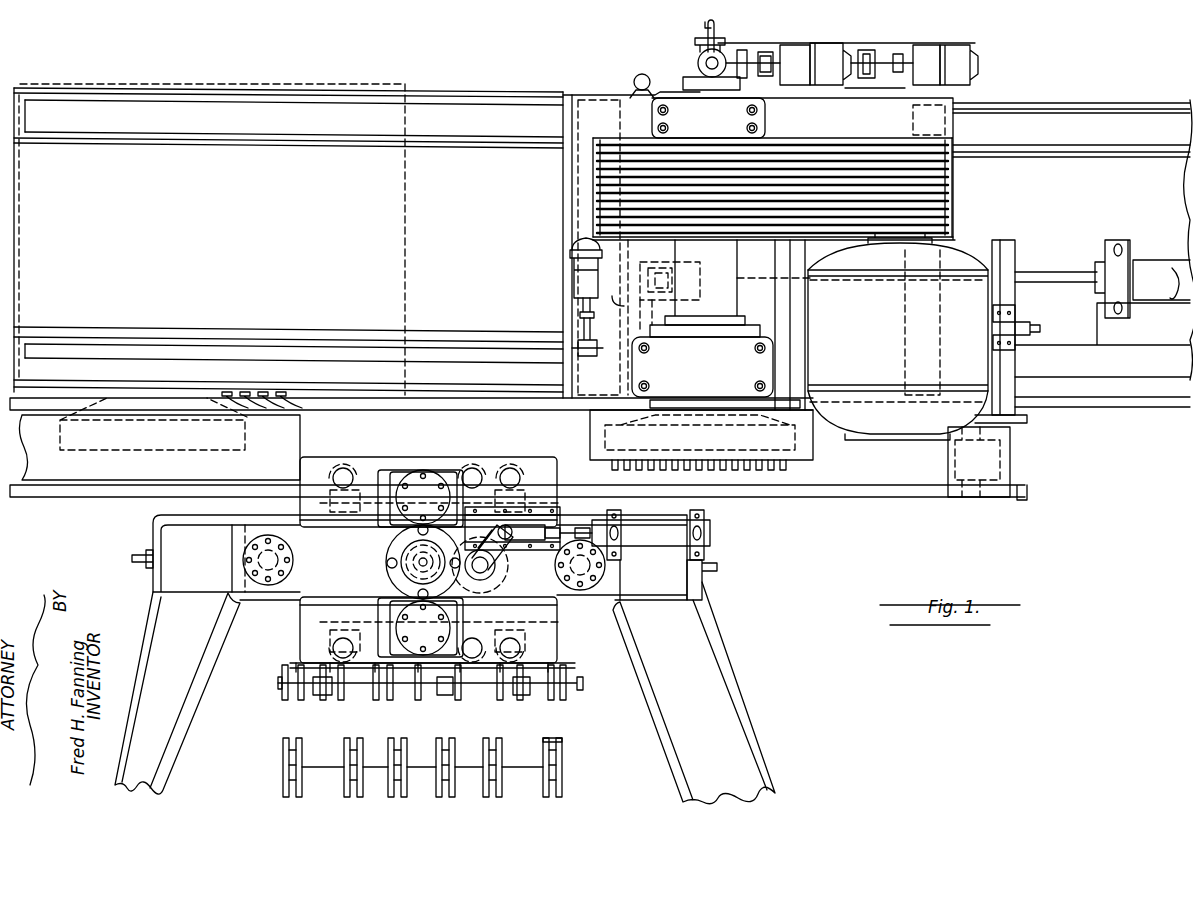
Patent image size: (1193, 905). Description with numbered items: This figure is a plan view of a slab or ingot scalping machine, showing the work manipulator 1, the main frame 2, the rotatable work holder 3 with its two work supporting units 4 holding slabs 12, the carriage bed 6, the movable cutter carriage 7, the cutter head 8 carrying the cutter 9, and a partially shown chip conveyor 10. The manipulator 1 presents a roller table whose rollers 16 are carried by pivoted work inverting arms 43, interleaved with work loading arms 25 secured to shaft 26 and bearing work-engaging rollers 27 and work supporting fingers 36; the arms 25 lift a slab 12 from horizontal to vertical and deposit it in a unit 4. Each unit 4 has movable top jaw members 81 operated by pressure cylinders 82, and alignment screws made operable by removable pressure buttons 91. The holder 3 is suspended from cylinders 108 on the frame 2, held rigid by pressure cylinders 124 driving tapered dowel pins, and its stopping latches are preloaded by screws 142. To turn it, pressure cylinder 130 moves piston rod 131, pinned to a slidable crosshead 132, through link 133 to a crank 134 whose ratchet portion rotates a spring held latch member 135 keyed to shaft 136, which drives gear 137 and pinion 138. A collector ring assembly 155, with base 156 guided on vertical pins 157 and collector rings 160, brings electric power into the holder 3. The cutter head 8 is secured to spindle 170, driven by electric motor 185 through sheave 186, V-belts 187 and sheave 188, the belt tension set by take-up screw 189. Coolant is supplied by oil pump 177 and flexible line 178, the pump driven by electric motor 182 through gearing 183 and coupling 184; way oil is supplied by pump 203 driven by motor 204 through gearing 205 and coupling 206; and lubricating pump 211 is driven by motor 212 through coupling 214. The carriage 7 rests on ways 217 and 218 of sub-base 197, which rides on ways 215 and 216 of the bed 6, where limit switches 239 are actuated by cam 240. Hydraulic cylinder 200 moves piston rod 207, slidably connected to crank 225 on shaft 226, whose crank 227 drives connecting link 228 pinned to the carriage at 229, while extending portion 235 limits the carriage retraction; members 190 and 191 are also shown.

The work manipulator 1 is at (268, 746).
The main frame 2 is at (310, 565).
The rotatable work holder 3 is at (290, 619).
The work supporting unit 4 is at (320, 481).
The carriage bed 6 is at (490, 243).
The cutter carriage 7 is at (842, 121).
The cutter head 8 is at (60, 435).
The cutter 9 is at (70, 455).
The chip conveyor 10 is at (68, 485).
The slab 12 is at (557, 475).
The roller 16 is at (552, 745).
The work loading arm 25 is at (296, 700).
The shaft 26 is at (568, 683).
The work-engaging roller 27 is at (290, 664).
The work supporting finger 36 is at (305, 650).
The work inverting arm 43 is at (560, 793).
The movable top jaw member 81 is at (340, 468).
The pressure cylinder 82 is at (353, 478).
The removable pressure button 91 is at (345, 492).
The cylinder 108 is at (420, 563).
The pressure cylinder 124 is at (424, 562).
The pressure cylinder 130 is at (660, 520).
The piston rod 131 is at (612, 520).
The slidable crosshead 132 is at (560, 520).
The link 133 is at (528, 520).
The crank 134 is at (505, 558).
The spring held latch member 135 is at (497, 570).
The shaft 136 is at (505, 580).
The gear 137 is at (557, 600).
The pinion 138 is at (395, 565).
The screw 142 is at (135, 556).
The collector ring assembly 155 is at (395, 545).
The base 156 is at (395, 585).
The vertical pin 157 is at (400, 575).
The collector ring 160 is at (400, 552).
The spindle 170 is at (718, 253).
The oil pump 177 is at (728, 56).
The flexible line 178 is at (705, 27).
The electric motor 182 is at (835, 55).
The gearing 183 is at (797, 64).
The coupling 184 is at (763, 72).
The electric motor 185 is at (888, 334).
The sheave 186 is at (918, 150).
The V-belt 187 is at (853, 160).
The sheave 188 is at (790, 150).
The take-up screw 189 is at (1032, 328).
The base plate 190 is at (715, 373).
The top plate 191 is at (730, 123).
The sub-base 197 is at (875, 89).
The hydraulic cylinder 200 is at (1142, 279).
The pump 203 is at (878, 52).
The electric motor 204 is at (965, 52).
The gearing 205 is at (929, 65).
The coupling 206 is at (900, 78).
The piston rod 207 is at (768, 275).
The pump 211 is at (572, 330).
The motor 212 is at (572, 258).
The coupling 214 is at (578, 300).
The way 215 is at (462, 324).
The way 216 is at (478, 138).
The way 217 is at (955, 135).
The way 218 is at (563, 162).
The crank 225 is at (675, 288).
The shaft 226 is at (678, 305).
The crank 227 is at (618, 340).
The connecting link 228 is at (640, 116).
The pin connection 229 is at (636, 82).
The extending portion 235 is at (654, 317).
The limit switch 239 is at (285, 392).
The cam 240 is at (510, 398).